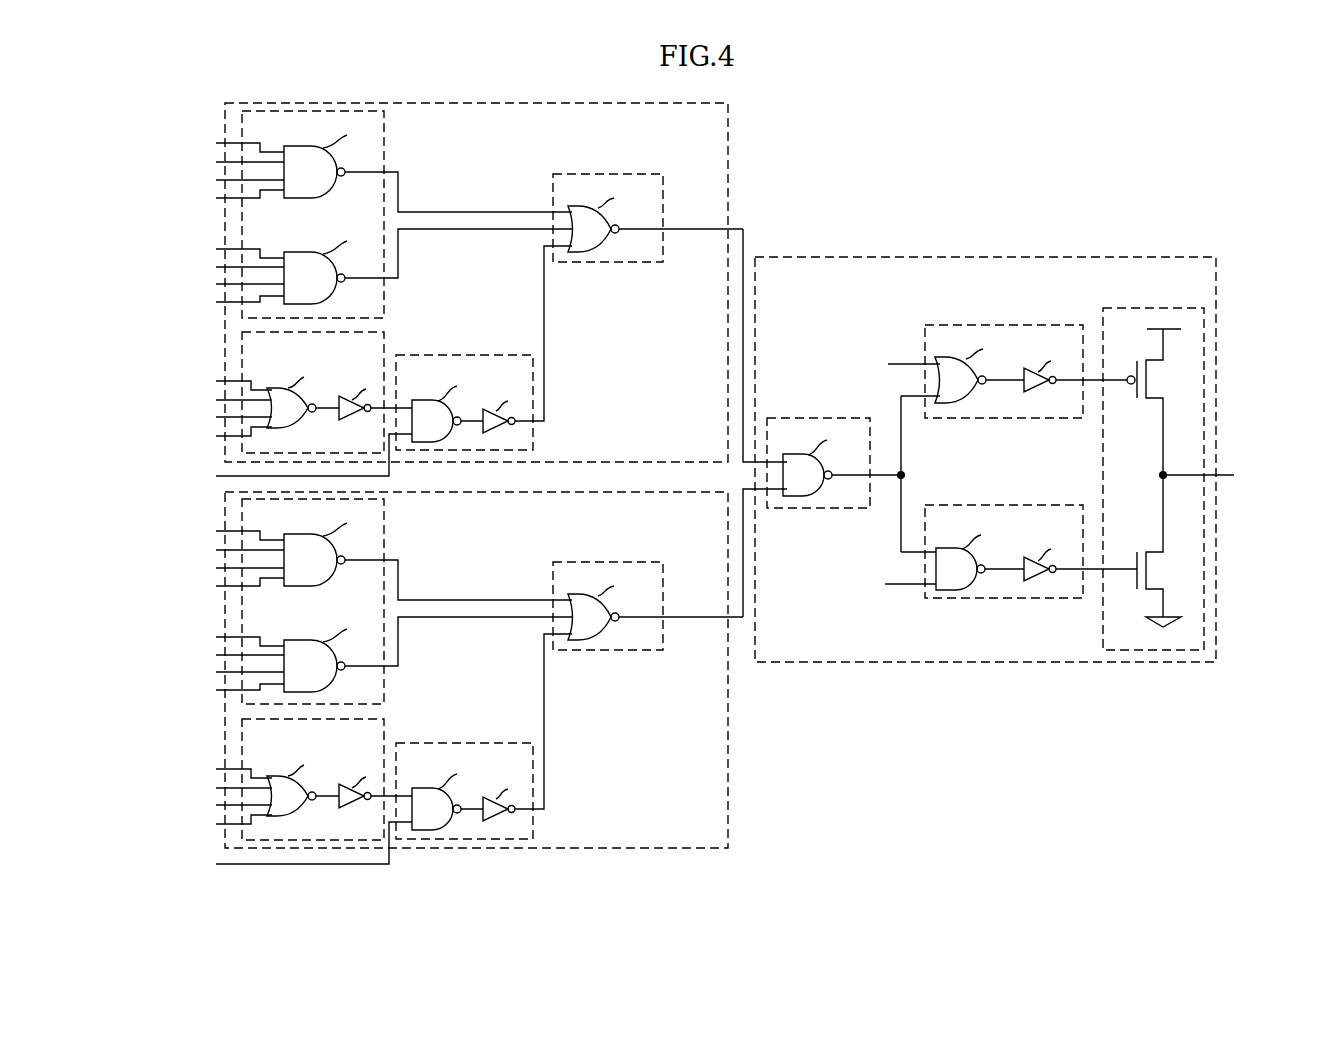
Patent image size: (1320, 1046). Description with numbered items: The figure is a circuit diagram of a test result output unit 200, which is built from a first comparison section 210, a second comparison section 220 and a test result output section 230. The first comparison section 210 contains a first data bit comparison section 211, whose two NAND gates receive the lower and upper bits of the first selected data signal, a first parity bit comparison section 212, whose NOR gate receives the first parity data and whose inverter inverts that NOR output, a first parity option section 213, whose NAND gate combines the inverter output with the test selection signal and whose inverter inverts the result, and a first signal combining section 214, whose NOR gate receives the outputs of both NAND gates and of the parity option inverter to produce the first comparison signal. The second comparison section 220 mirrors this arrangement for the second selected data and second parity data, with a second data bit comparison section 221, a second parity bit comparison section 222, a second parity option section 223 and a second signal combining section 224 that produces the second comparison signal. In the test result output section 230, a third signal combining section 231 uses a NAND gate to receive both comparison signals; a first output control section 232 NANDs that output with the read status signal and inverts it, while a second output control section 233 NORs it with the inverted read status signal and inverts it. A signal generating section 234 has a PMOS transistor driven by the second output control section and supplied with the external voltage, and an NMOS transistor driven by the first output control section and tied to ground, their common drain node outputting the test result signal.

The test result output unit 200 is at (1212, 157).
The first comparison section 210 is at (728, 148).
The first data bit comparison section 211 is at (384, 154).
The first parity bit comparison section 212 is at (384, 346).
The first parity option section 213 is at (478, 356).
The first signal combining section 214 is at (607, 174).
The second comparison section 220 is at (439, 682).
The second data bit comparison section 221 is at (407, 601).
The second parity bit comparison section 222 is at (335, 771).
The second parity option section 223 is at (484, 736).
The second signal combining section 224 is at (648, 591).
The test result output section 230 is at (1083, 257).
The third signal combining section 231 is at (817, 418).
The first output control section 232 is at (1003, 505).
The second output control section 233 is at (1003, 325).
The signal generating section 234 is at (1166, 308).